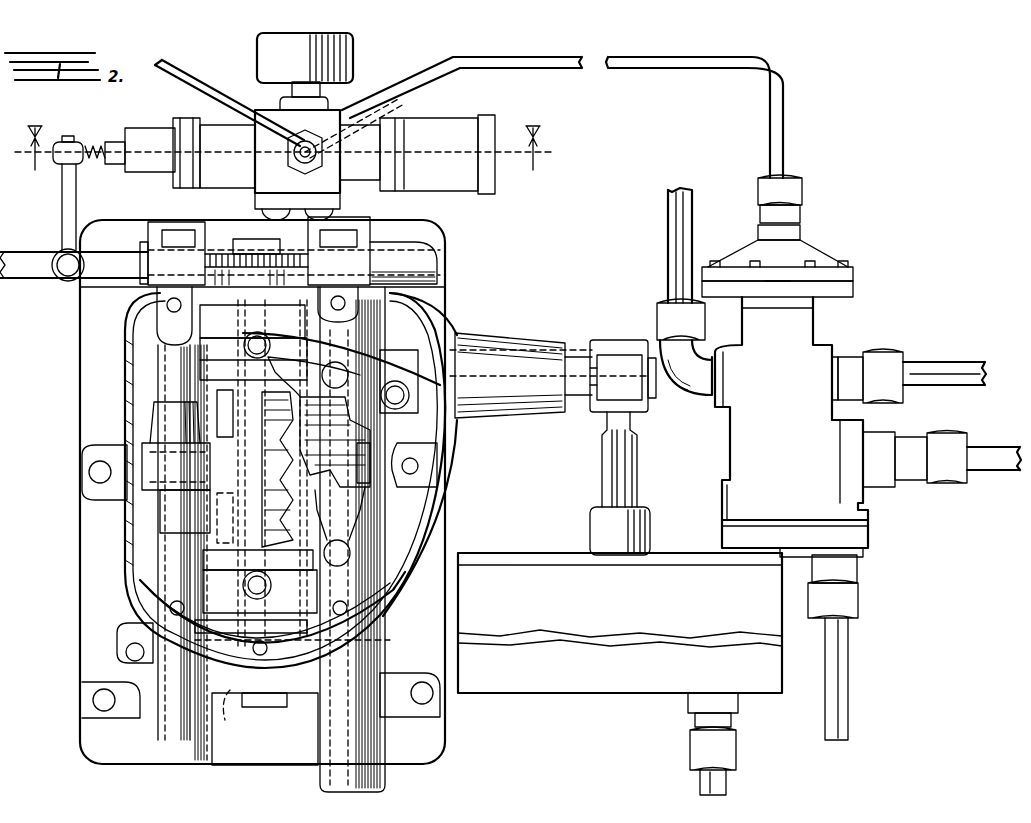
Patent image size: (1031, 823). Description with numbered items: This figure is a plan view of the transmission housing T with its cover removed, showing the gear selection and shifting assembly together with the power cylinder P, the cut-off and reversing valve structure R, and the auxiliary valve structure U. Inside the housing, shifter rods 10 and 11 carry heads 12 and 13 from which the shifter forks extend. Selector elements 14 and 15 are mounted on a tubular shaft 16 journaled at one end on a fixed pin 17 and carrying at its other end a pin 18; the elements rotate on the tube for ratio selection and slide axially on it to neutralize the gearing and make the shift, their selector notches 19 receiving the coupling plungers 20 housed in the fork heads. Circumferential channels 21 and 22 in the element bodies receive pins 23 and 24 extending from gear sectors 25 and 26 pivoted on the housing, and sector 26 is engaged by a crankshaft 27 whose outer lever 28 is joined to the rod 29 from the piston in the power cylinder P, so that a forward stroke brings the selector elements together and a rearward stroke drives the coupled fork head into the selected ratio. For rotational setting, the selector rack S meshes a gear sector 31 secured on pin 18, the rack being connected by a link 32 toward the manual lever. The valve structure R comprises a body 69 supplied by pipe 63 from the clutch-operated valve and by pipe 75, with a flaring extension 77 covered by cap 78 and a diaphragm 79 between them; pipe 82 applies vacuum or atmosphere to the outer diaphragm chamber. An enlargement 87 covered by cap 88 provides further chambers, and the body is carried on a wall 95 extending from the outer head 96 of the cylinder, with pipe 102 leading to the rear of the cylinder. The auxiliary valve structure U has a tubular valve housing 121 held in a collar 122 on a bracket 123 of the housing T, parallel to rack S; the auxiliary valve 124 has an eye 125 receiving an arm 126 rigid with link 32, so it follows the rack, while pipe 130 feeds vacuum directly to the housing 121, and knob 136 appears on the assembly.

The shifter rod 10 is at (160, 566).
The shifter rod 11 is at (360, 592).
The head 12 is at (165, 512).
The head 13 is at (372, 472).
The selector element 14 is at (213, 562).
The selector element 15 is at (213, 383).
The tubular shaft 16 is at (245, 624).
The fixed pin 17 is at (236, 706).
The pin 18 is at (280, 308).
The selector notch 19 is at (228, 442).
The coupling plunger 20 is at (212, 470).
The channel 21 is at (240, 583).
The channel 22 is at (203, 385).
The pin 23 is at (247, 592).
The pin 24 is at (246, 348).
The gear sector 25 is at (366, 545).
The gear sector 26 is at (365, 375).
The crankshaft 27 is at (572, 355).
The lever 28 is at (607, 362).
The rod 29 is at (640, 468).
The gear sector 31 is at (292, 253).
The link 32 is at (34, 270).
The pipe 63 is at (672, 250).
The valve body 69 is at (745, 462).
The pipe 75 is at (966, 385).
The flaring extension 77 is at (840, 285).
The cap 78 is at (850, 268).
The diaphragm 79 is at (855, 276).
The pipe 82 is at (536, 68).
The enlargement 87 is at (855, 440).
The cap 88 is at (890, 485).
The bracket or wall 95 is at (870, 536).
The outer head 96 is at (700, 565).
The pipe 102 is at (728, 785).
The tubular valve housing 121 is at (230, 167).
The collar 122 is at (268, 118).
The bracket 123 is at (342, 203).
The auxiliary valve 124 is at (92, 142).
The eye 125 is at (66, 158).
The arm 126 is at (76, 213).
The pipe 130 is at (225, 85).
The hand knob 136 is at (354, 58).
The power cylinder P is at (590, 575).
The regulator R is at (791, 408).
The selector rack S is at (120, 255).
The transmission housing T is at (90, 615).
The auxiliary valve structure U is at (333, 112).